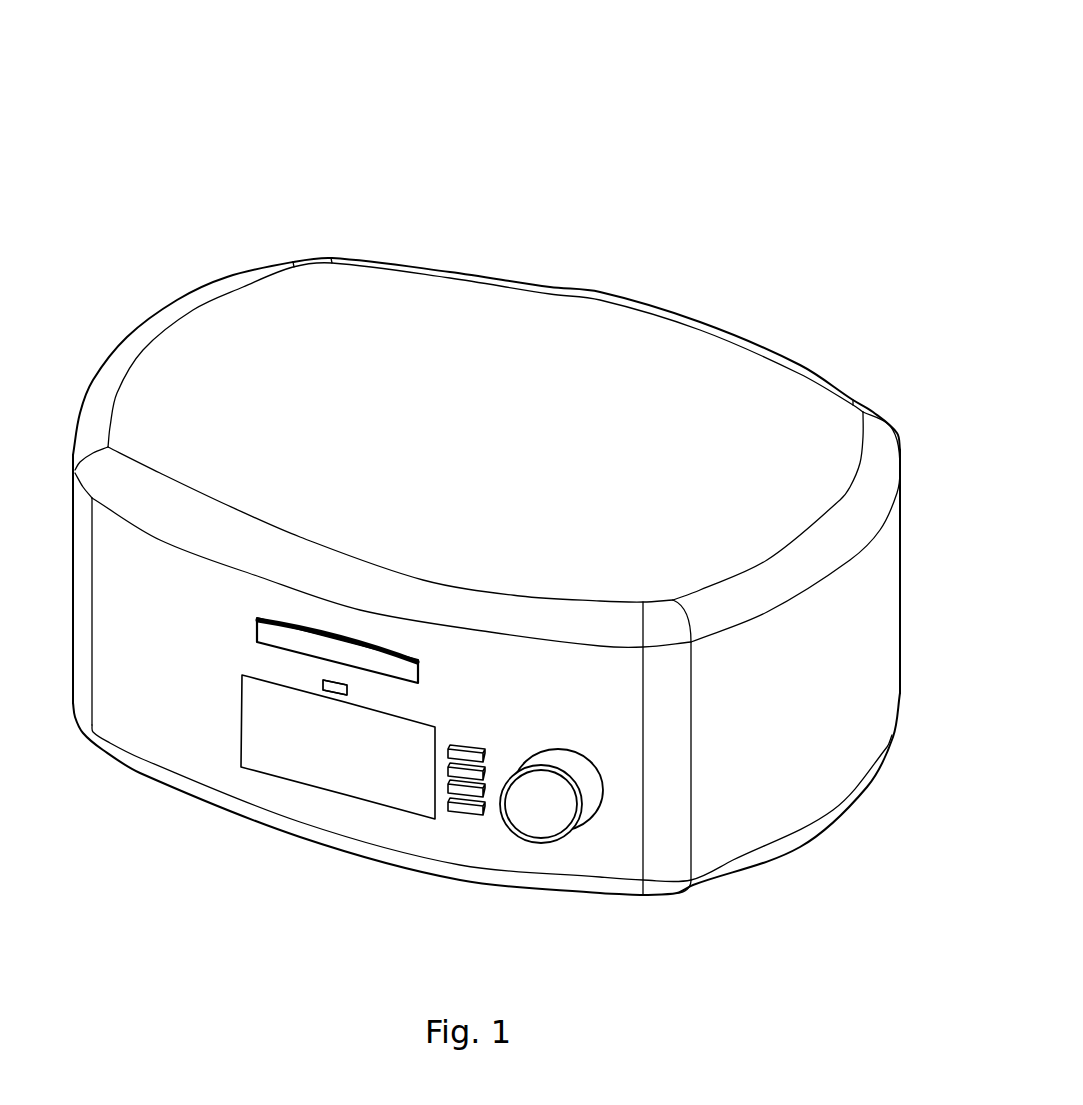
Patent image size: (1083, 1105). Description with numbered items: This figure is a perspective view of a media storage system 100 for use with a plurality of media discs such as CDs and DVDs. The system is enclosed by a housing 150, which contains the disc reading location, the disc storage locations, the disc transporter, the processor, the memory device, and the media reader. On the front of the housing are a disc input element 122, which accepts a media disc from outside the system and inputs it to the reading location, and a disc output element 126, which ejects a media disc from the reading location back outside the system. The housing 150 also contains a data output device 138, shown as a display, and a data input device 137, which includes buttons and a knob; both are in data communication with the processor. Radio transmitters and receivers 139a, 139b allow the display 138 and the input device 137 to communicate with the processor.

The media storage system 100 is at (711, 102).
The disc input element 122 is at (288, 603).
The disc output element 126 is at (343, 619).
The housing 150 is at (643, 367).
The data input device 137 is at (474, 839).
The data output device 138 is at (381, 802).
The radio transmitter and receiver 139a is at (306, 691).
The radio transmitter and receiver 139b is at (324, 712).